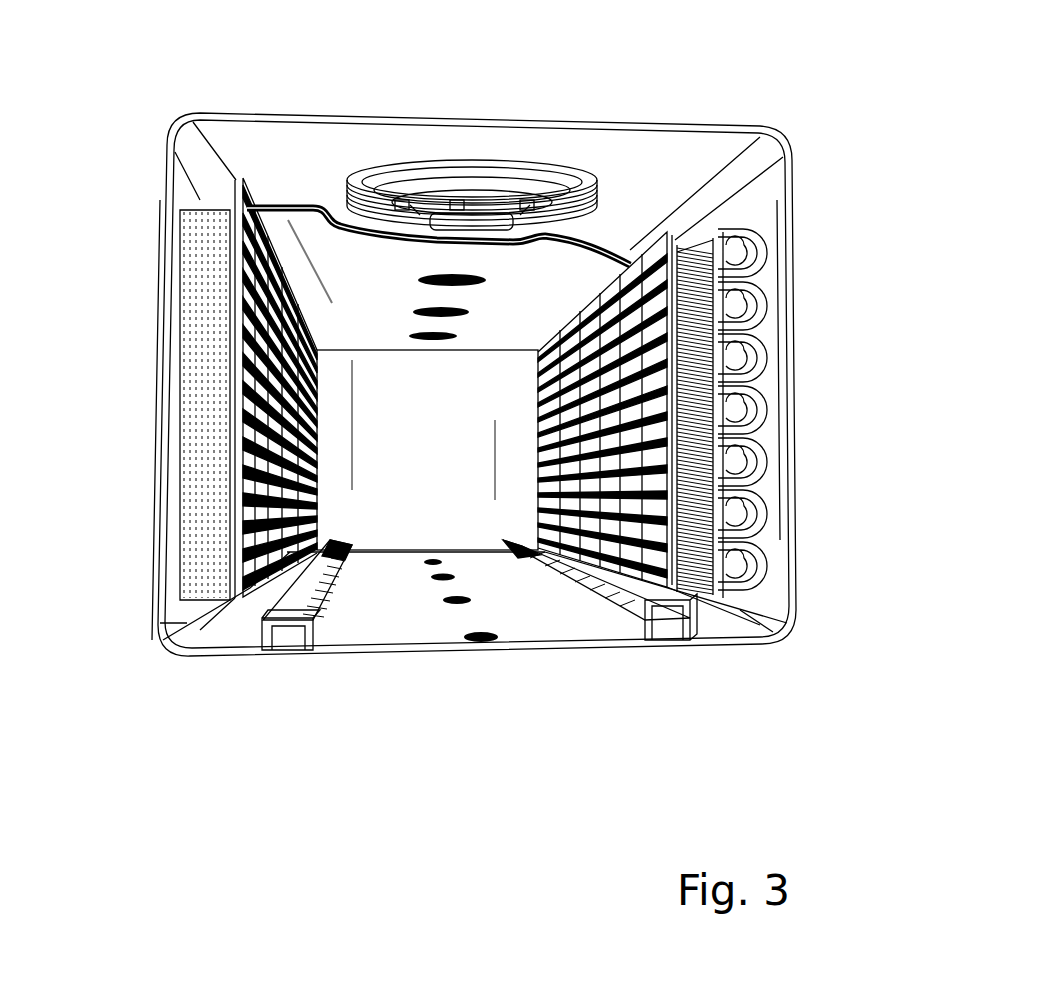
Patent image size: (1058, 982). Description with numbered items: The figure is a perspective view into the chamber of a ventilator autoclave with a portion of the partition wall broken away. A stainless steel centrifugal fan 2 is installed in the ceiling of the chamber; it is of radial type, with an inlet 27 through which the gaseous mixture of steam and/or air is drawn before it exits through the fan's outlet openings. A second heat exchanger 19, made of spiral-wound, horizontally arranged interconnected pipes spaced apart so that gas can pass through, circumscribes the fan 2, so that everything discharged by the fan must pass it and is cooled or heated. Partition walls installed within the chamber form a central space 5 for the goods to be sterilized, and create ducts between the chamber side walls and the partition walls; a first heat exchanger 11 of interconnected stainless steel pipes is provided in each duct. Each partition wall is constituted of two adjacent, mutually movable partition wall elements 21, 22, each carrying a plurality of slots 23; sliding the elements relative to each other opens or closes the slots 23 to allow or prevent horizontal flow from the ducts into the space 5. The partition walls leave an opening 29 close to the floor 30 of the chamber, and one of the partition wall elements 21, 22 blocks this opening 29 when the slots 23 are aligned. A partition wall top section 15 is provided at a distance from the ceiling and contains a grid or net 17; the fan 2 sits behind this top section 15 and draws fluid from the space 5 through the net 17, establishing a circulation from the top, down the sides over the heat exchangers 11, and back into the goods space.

The fan 2 is at (438, 192).
The space 5 is at (380, 480).
The first heat exchanger 11 is at (762, 305).
The partition wall top section 15 is at (647, 605).
The grid or net 17 is at (427, 343).
The second heat exchanger 19 is at (597, 192).
The partition wall element 21 is at (767, 417).
The partition wall element 22 is at (767, 503).
The slots 23 is at (767, 465).
The inlet 27 is at (495, 247).
The opening 29 is at (160, 623).
The floor 30 is at (545, 653).